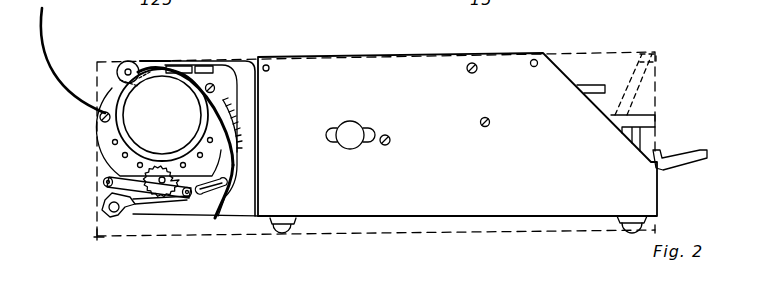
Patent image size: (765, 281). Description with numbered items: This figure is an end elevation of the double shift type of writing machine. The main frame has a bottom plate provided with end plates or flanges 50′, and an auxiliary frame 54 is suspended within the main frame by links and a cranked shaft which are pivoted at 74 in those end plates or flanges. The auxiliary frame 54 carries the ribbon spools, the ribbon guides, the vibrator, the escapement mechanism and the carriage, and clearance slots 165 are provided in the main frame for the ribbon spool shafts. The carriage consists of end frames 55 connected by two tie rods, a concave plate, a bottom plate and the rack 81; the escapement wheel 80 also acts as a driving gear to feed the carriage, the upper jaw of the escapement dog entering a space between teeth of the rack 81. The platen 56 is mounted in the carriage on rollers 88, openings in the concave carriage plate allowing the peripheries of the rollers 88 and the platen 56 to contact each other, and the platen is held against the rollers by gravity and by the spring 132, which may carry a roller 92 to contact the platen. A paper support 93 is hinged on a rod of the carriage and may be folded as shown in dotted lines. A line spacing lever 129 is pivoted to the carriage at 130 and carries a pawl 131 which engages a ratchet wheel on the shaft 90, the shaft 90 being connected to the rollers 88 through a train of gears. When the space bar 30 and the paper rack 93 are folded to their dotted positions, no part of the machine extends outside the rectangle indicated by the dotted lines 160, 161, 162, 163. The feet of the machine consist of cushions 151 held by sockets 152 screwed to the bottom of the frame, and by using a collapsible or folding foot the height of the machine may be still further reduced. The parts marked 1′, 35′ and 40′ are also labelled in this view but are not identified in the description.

The main casing 1' is at (395, 125).
The space bar 30 is at (656, 60).
The step 35' is at (596, 78).
The step 40' is at (649, 122).
The end plates or flanges 50' is at (350, 148).
The auxiliary frame 54 is at (197, 138).
The end frames 55 is at (110, 165).
The platen 56 is at (162, 115).
The pivot 74 is at (268, 66).
The escapement wheel 80 is at (236, 126).
The rack 81 is at (232, 109).
The rollers 88 is at (199, 141).
The shaft 90 is at (160, 182).
The roller 92 is at (124, 62).
The paper support 93 is at (153, 66).
The line spacing lever 129 is at (222, 165).
The pivot 130 is at (101, 188).
The pawl 131 is at (197, 187).
The spring 132 is at (167, 63).
The cushions 151 is at (628, 225).
The sockets 152 is at (617, 219).
The dotted line 160 is at (357, 144).
The dotted line 161 is at (656, 53).
The dotted line 162 is at (658, 230).
The dotted line 163 is at (82, 235).
The clearance slots 165 is at (378, 126).